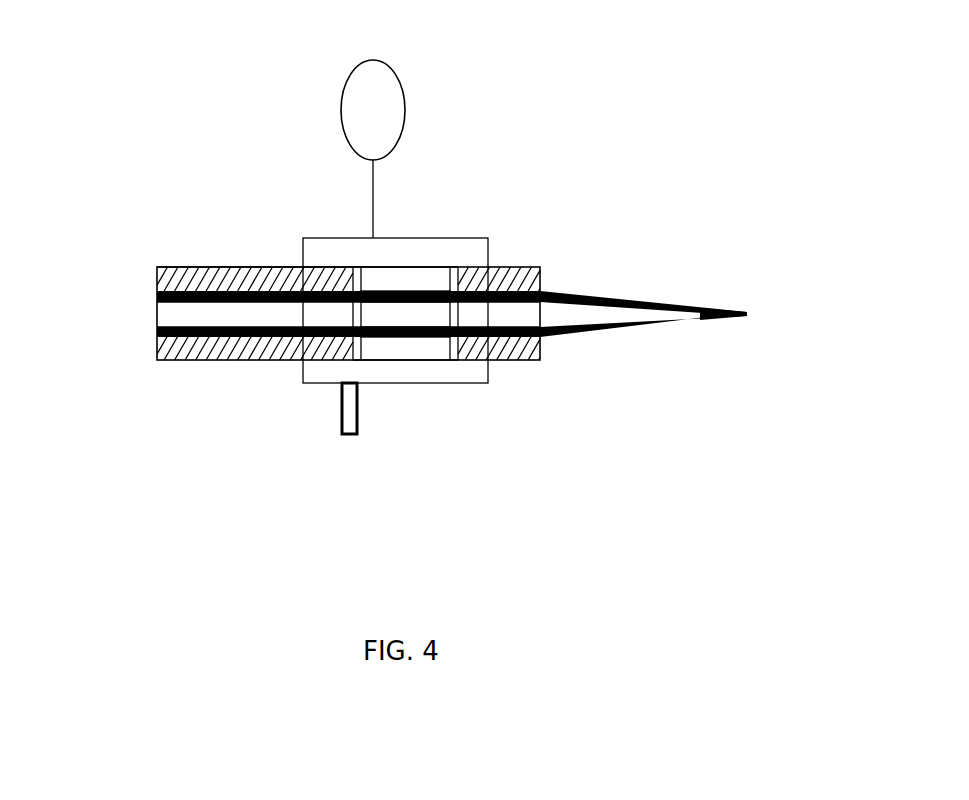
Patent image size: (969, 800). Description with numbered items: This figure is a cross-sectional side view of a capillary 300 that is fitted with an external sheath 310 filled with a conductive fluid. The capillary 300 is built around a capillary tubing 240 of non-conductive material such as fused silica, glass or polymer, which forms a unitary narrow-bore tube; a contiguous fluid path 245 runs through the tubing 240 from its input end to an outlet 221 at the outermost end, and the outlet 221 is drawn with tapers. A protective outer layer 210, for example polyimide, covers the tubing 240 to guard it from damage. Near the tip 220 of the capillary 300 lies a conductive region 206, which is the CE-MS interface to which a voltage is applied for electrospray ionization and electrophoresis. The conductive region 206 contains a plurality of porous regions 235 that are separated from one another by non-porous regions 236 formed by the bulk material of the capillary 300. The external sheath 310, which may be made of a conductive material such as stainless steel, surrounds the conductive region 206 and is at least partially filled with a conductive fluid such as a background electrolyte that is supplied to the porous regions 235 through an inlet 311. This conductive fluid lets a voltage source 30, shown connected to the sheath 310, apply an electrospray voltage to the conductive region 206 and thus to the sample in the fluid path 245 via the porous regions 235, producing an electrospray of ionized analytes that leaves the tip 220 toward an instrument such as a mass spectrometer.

The capillary 300 is at (796, 99).
The voltage source 30 is at (333, 87).
The external sheath 310 is at (495, 222).
The inlet 311 is at (355, 437).
The protective outer layer 210 is at (210, 363).
The conductive region 206 is at (434, 375).
The capillary tubing 240 is at (185, 267).
The non-porous regions 236 is at (282, 267).
The fluid path 245 is at (168, 312).
The porous regions 235 is at (435, 285).
The tip 220 is at (604, 330).
The outlet 221 is at (758, 313).